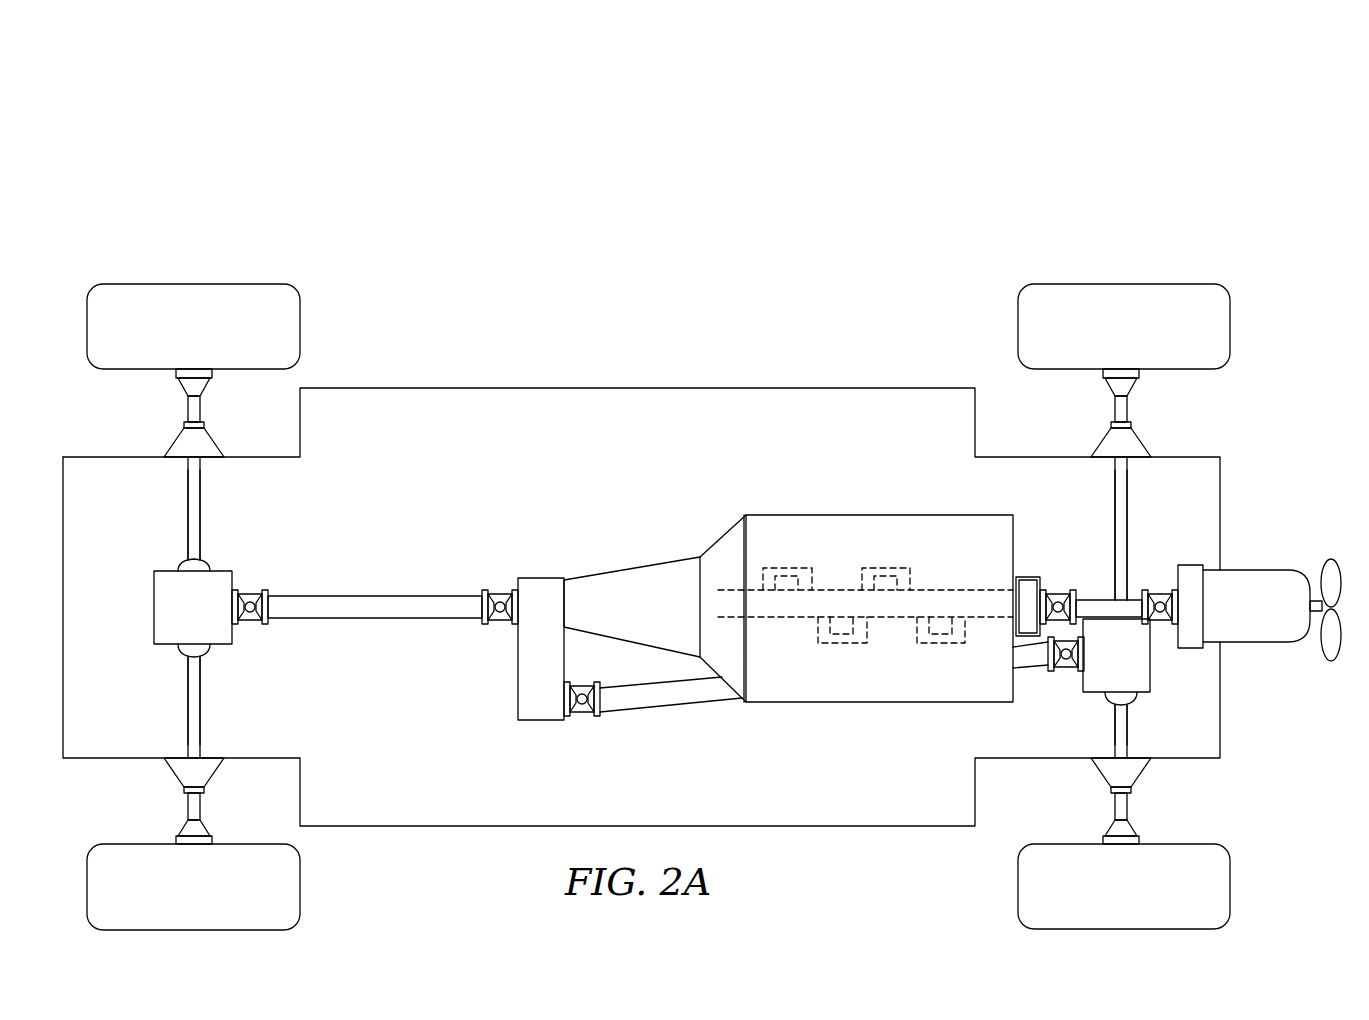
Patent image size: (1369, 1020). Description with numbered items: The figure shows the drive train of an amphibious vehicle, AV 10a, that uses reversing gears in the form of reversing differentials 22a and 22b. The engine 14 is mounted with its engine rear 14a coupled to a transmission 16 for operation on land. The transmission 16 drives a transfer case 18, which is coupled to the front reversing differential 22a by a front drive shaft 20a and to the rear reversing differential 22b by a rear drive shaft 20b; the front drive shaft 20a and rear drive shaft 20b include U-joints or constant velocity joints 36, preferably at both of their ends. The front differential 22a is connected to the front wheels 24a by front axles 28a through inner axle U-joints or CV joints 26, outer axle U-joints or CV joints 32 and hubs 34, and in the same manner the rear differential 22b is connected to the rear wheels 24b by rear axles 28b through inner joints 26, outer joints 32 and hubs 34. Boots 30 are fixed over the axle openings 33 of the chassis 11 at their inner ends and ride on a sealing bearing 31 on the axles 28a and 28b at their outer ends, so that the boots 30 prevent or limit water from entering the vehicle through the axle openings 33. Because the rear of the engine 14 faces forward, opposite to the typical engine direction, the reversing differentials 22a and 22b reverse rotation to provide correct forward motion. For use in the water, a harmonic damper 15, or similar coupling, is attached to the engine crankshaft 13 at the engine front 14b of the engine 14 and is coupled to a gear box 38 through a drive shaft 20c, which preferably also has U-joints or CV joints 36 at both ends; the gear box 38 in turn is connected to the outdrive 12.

The AV 10a is at (391, 198).
The chassis 11 is at (560, 431).
The outdrive 12 is at (1240, 605).
The engine crankshaft 13 is at (782, 614).
The engine 14 is at (926, 553).
The engine rear 14a is at (737, 530).
The engine front 14b is at (1015, 536).
The harmonic damper 15 is at (1029, 592).
The transmission 16 is at (615, 611).
The transfer case 18 is at (532, 650).
The front drive shaft 20a is at (390, 604).
The rear drive shaft 20b is at (665, 696).
The drive shaft 20c is at (1106, 608).
The front reversing differential 22a is at (172, 608).
The rear reversing differential 22b is at (1104, 668).
The front wheels 24a is at (175, 335).
The rear wheels 24b is at (1100, 325).
The inner axle U-joints or CV joints 26 is at (206, 566).
The front axles 28a is at (201, 522).
The rear axles 28b is at (1128, 512).
The boots 30 is at (206, 442).
The sealing bearing 31 is at (205, 426).
The outer axle U-joints or CV joints 32 is at (190, 390).
The axle openings 33 is at (178, 462).
The hubs 34 is at (178, 376).
The U-joints or CV joints 36 is at (255, 600).
The gear box 38 is at (1190, 570).